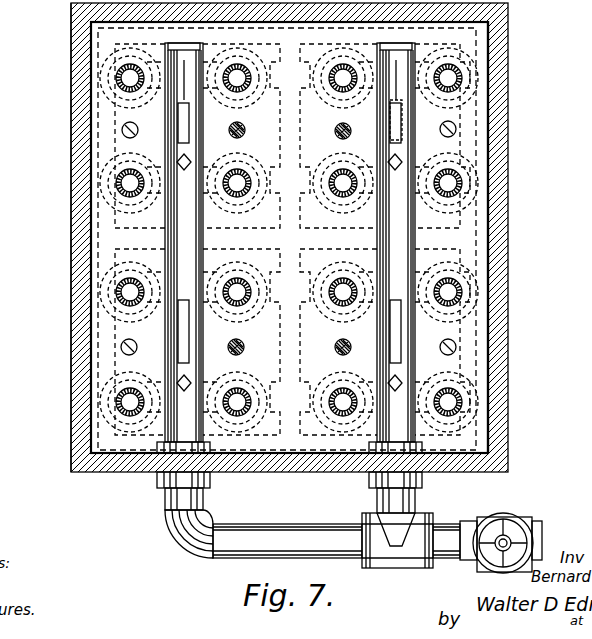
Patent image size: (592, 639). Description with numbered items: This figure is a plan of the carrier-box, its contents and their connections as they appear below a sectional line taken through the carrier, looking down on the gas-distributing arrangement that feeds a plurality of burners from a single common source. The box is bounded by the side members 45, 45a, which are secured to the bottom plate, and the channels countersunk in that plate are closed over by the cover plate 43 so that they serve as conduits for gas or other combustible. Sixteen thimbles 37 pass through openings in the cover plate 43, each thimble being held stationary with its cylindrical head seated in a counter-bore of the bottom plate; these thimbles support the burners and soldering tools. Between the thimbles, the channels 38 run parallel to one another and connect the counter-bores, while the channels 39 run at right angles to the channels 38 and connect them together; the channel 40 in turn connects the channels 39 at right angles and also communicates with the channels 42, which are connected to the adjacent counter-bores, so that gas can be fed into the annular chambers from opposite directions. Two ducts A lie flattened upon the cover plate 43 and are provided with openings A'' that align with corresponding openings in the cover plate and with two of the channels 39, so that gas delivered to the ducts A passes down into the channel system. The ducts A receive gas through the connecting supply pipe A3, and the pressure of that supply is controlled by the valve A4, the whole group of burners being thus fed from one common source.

The thimble 37 is at (120, 82).
The channels 38 is at (158, 100).
The channels 39 is at (333, 148).
The channel 40 is at (505, 233).
The channels 42 is at (103, 142).
The cover plate 43 is at (468, 222).
The side member 45 is at (305, 478).
The side member 45a is at (80, 243).
The ducts A is at (289, 265).
The openings A'' is at (289, 272).
The supply pipe A3 is at (317, 533).
The valve A4 is at (500, 515).